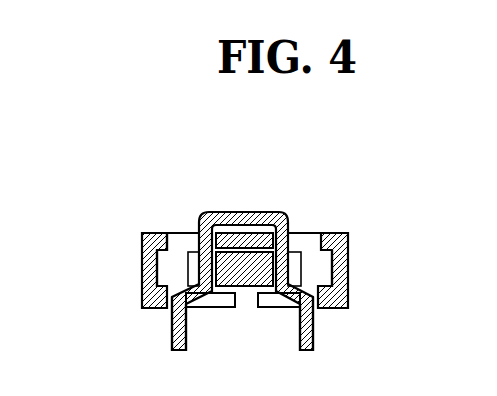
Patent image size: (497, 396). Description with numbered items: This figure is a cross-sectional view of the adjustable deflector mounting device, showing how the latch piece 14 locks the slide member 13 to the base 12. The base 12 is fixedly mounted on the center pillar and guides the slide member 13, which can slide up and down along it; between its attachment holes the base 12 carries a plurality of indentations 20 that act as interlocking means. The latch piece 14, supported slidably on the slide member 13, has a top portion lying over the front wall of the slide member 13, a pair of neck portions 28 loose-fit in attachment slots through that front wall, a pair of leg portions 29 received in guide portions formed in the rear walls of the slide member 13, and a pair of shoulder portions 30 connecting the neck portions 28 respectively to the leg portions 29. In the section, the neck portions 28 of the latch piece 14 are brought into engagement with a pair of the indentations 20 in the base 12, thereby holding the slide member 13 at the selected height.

The base 12 is at (256, 227).
The slide member 13 is at (147, 233).
The latch piece 14 is at (245, 211).
The indentations 20 is at (290, 255).
The neck portions 28 is at (185, 230).
The leg portions 29 is at (172, 326).
The shoulder portions 30 is at (188, 284).